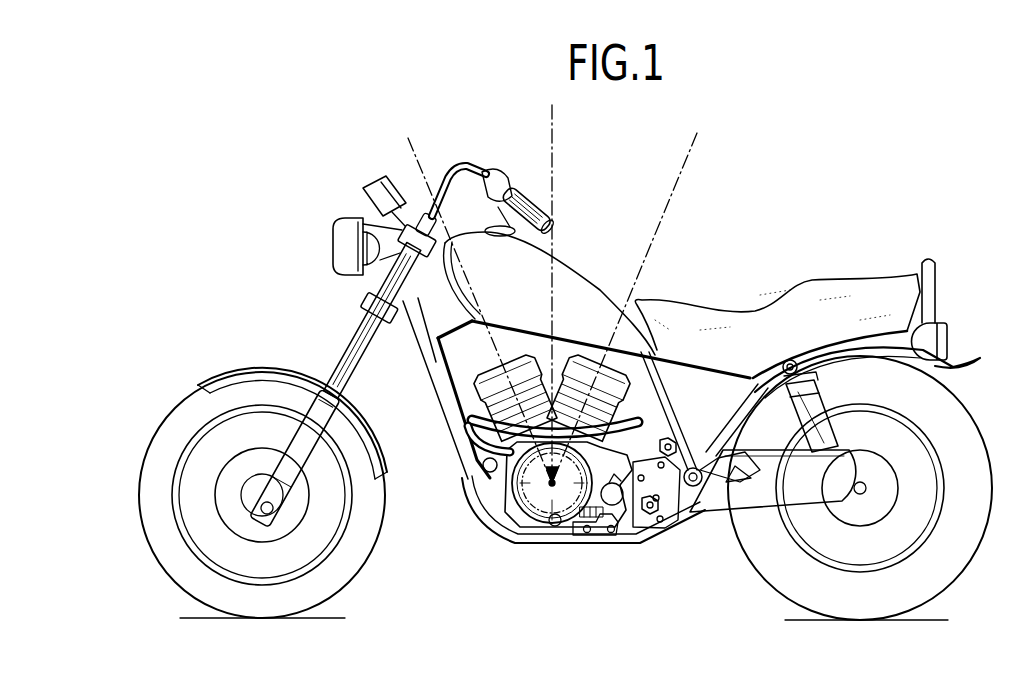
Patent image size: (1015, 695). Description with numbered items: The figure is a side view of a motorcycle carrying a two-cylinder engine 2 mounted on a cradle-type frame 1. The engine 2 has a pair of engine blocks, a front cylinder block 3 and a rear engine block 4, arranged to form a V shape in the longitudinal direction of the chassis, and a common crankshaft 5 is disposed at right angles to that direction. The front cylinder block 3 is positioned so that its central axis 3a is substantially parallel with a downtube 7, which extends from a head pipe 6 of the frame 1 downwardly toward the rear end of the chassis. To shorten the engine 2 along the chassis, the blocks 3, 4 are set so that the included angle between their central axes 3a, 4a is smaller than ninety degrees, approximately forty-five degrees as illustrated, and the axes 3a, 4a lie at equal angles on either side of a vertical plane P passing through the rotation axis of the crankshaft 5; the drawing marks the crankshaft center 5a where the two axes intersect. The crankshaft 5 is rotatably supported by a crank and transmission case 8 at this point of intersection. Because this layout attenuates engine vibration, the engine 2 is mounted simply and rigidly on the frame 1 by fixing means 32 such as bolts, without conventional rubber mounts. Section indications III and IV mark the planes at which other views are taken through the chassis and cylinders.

The frame 1 is at (440, 415).
The two-cylinder engine 2 is at (500, 370).
The front cylinder block 3 is at (525, 371).
The central axis of front cylinder block 3a is at (408, 138).
The rear engine block 4 is at (583, 375).
The central axis of rear engine block 4a is at (697, 149).
The crankshaft 5 is at (552, 487).
The crankshaft axis 5a is at (557, 483).
The head pipe 6 is at (403, 283).
The downtube 7 is at (431, 383).
The crank and transmission case 8 is at (516, 513).
The fixing means 32 is at (485, 468).
The vertical plane P is at (552, 122).
The section line III is at (448, 471).
The section line IV is at (501, 365).